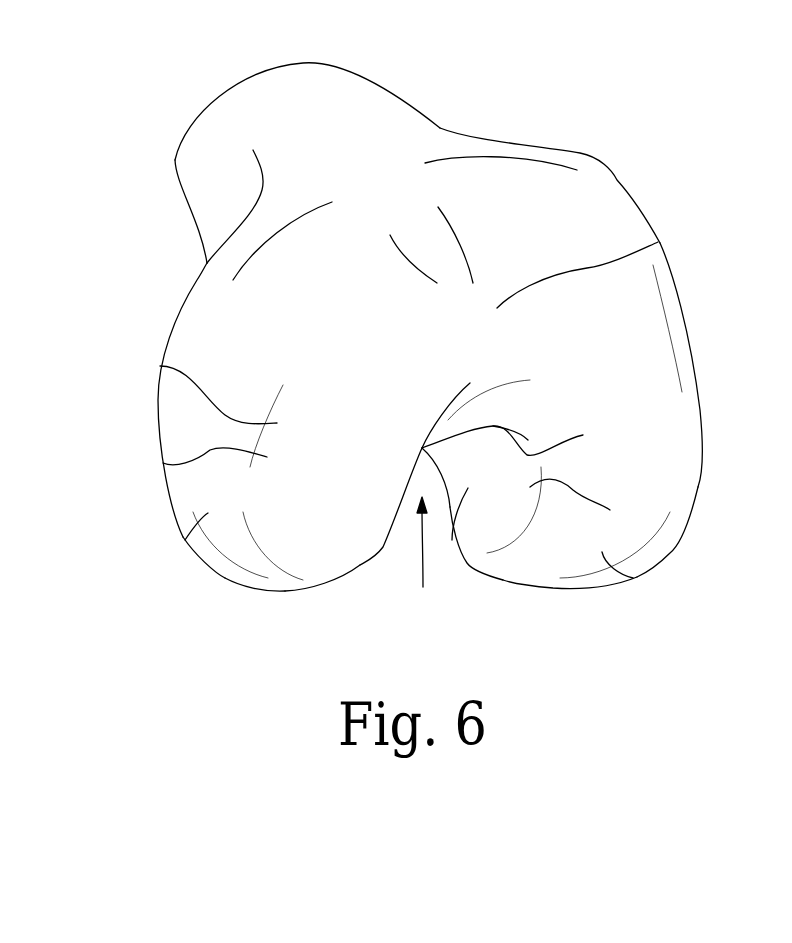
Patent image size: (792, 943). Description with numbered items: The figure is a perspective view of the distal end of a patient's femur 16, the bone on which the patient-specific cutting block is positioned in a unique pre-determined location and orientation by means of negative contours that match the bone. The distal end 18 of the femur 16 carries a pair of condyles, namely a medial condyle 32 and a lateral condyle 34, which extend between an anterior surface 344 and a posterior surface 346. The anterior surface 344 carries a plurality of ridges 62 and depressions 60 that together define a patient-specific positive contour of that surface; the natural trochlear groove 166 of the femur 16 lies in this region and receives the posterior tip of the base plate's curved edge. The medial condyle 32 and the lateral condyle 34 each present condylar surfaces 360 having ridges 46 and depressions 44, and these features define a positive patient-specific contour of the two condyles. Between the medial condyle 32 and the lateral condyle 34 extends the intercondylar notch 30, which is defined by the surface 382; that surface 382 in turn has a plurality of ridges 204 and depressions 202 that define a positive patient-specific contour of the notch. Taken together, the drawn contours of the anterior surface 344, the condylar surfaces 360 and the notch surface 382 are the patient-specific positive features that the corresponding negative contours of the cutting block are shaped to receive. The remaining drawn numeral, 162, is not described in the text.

The femur 16 is at (713, 329).
The distal end 18 is at (313, 560).
The intercondylar notch 30 is at (428, 558).
The medial condyle 32 is at (237, 570).
The lateral condyle 34 is at (583, 593).
The depressions 44 is at (163, 463).
The ridges 46 is at (185, 540).
The depressions 60 is at (603, 185).
The ridges 62 is at (472, 172).
The lateral posterior edge 162 is at (633, 578).
The trochlear groove 166 is at (655, 247).
The depressions 202 is at (407, 507).
The ridges 204 is at (470, 560).
The anterior surface 344 is at (382, 97).
The posterior surface 346 is at (272, 592).
The condylar surfaces 360 is at (160, 366).
The surface 382 is at (437, 428).